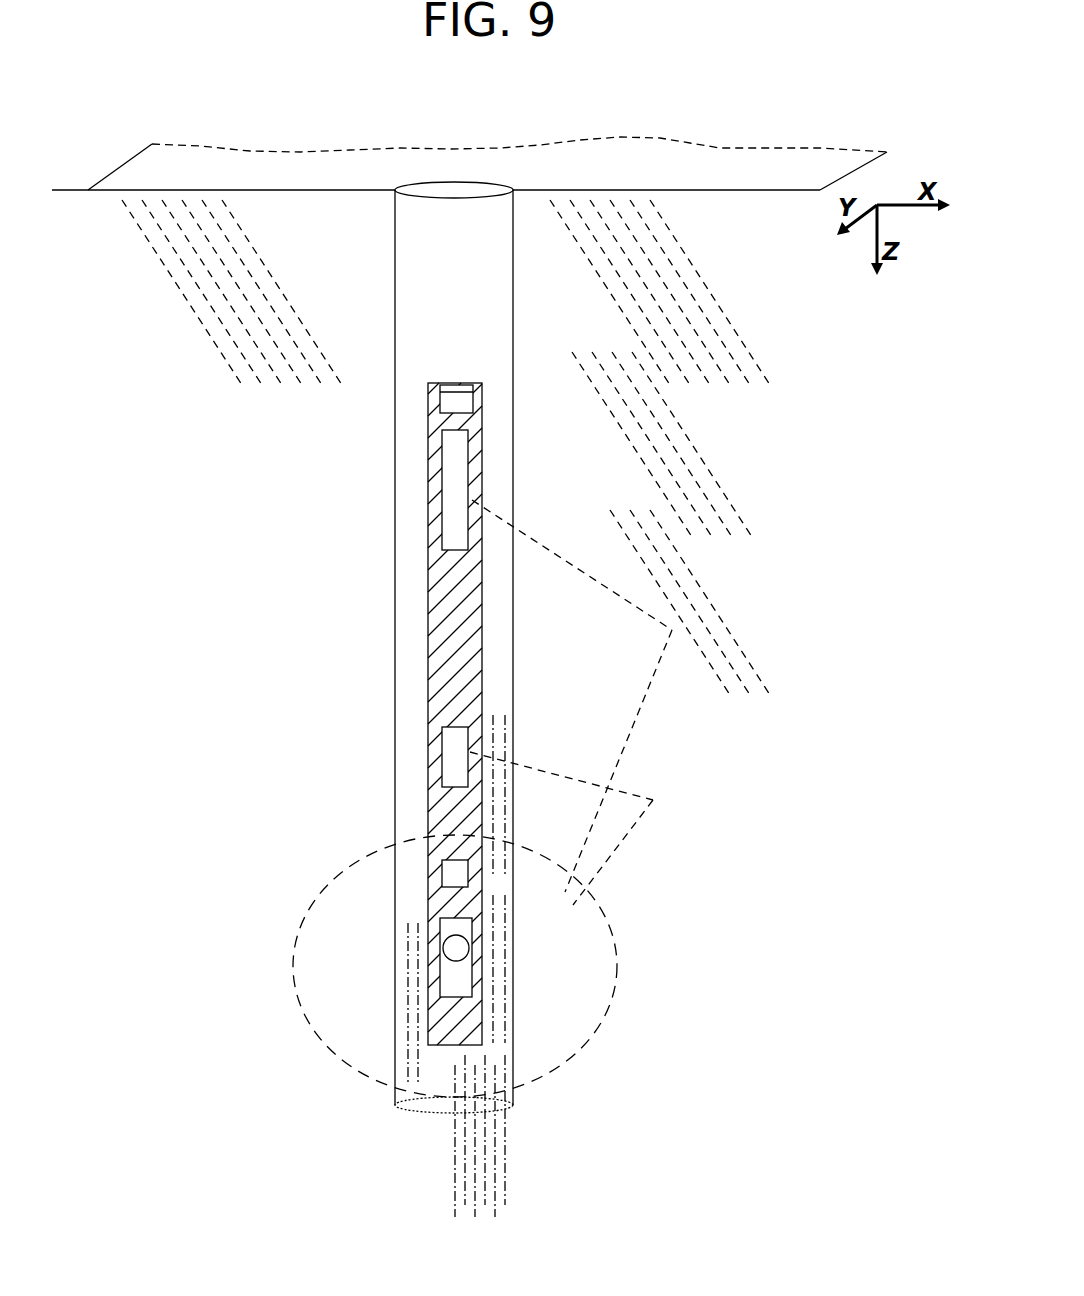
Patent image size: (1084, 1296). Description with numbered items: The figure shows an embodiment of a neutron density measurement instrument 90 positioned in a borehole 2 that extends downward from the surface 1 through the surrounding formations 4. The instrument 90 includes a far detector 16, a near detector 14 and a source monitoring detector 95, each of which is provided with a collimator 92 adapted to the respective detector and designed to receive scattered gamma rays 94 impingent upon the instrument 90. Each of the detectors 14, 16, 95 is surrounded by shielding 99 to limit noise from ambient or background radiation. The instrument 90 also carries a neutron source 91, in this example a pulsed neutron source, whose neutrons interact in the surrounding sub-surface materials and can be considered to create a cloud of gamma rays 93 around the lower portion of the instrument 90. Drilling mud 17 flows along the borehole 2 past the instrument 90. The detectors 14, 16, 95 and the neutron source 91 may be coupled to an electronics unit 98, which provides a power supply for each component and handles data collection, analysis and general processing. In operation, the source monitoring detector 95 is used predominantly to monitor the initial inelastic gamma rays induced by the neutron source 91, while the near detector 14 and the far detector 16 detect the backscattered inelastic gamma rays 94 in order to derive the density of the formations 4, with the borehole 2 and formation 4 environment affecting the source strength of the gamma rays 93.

The earth surface 1 is at (292, 165).
The borehole 2 is at (467, 195).
The formations 4 is at (233, 282).
The neutron density measurement instrument 90 is at (428, 570).
The shielding 99 is at (438, 643).
The electronics unit 98 is at (438, 402).
The far detector 16 is at (440, 515).
The near detector 14 is at (440, 738).
The source monitoring detector 95 is at (443, 858).
The neutron source 91 is at (442, 940).
The collimator 92 is at (474, 458).
The scattered gamma rays 94 is at (645, 767).
The cloud of gamma rays 93 is at (491, 978).
The drilling mud 17 is at (495, 1170).